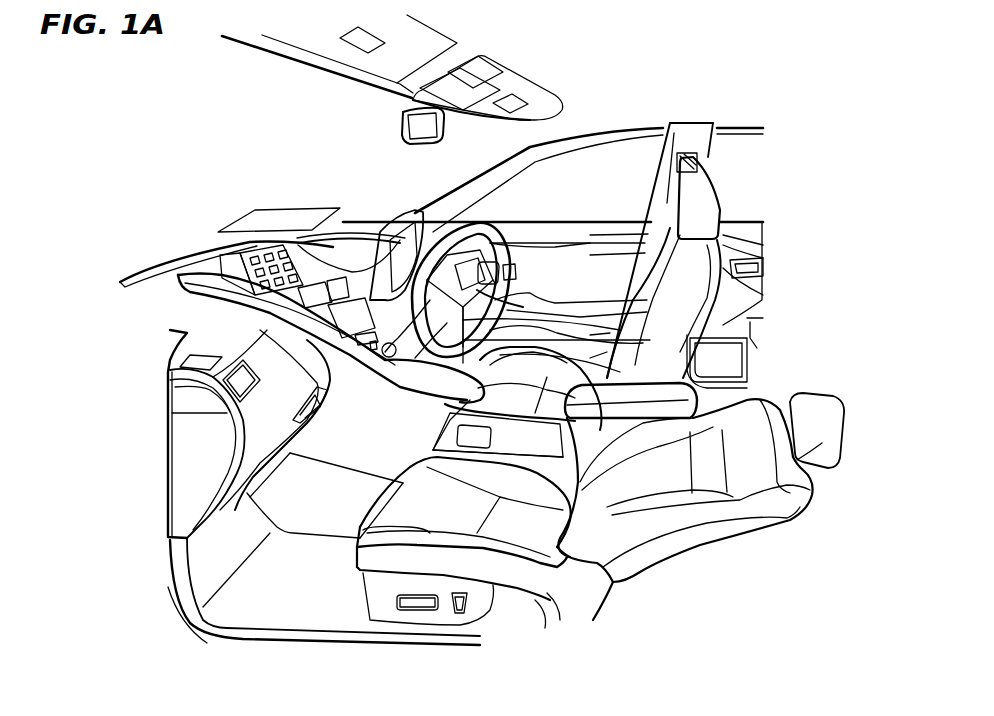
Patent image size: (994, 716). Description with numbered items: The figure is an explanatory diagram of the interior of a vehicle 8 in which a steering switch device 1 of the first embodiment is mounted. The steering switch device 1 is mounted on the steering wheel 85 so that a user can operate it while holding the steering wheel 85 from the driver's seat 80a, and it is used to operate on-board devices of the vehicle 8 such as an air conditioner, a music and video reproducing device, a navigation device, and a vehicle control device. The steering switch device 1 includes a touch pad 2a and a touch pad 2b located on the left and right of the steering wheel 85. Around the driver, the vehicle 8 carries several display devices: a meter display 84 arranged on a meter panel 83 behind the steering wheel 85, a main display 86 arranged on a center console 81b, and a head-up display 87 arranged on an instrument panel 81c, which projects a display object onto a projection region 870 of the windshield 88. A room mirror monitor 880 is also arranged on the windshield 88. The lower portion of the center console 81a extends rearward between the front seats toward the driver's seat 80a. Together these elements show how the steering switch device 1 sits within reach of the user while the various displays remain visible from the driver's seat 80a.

The vehicle 8 is at (803, 78).
The windshield 88 is at (250, 60).
The room mirror monitor 880 is at (410, 125).
The projection region 870 is at (238, 223).
The head-up display 87 is at (307, 233).
The instrument panel 81c is at (343, 243).
The meter display 84 is at (387, 260).
The meter panel 83 is at (443, 230).
The steering switch device 1 is at (508, 177).
The touch pad 2a is at (490, 243).
The touch pad 2b is at (515, 252).
The steering wheel 85 is at (567, 240).
The driver's seat 80a is at (705, 228).
The main display 86 is at (215, 246).
The center console 81b is at (405, 372).
The lower console 81a is at (502, 440).